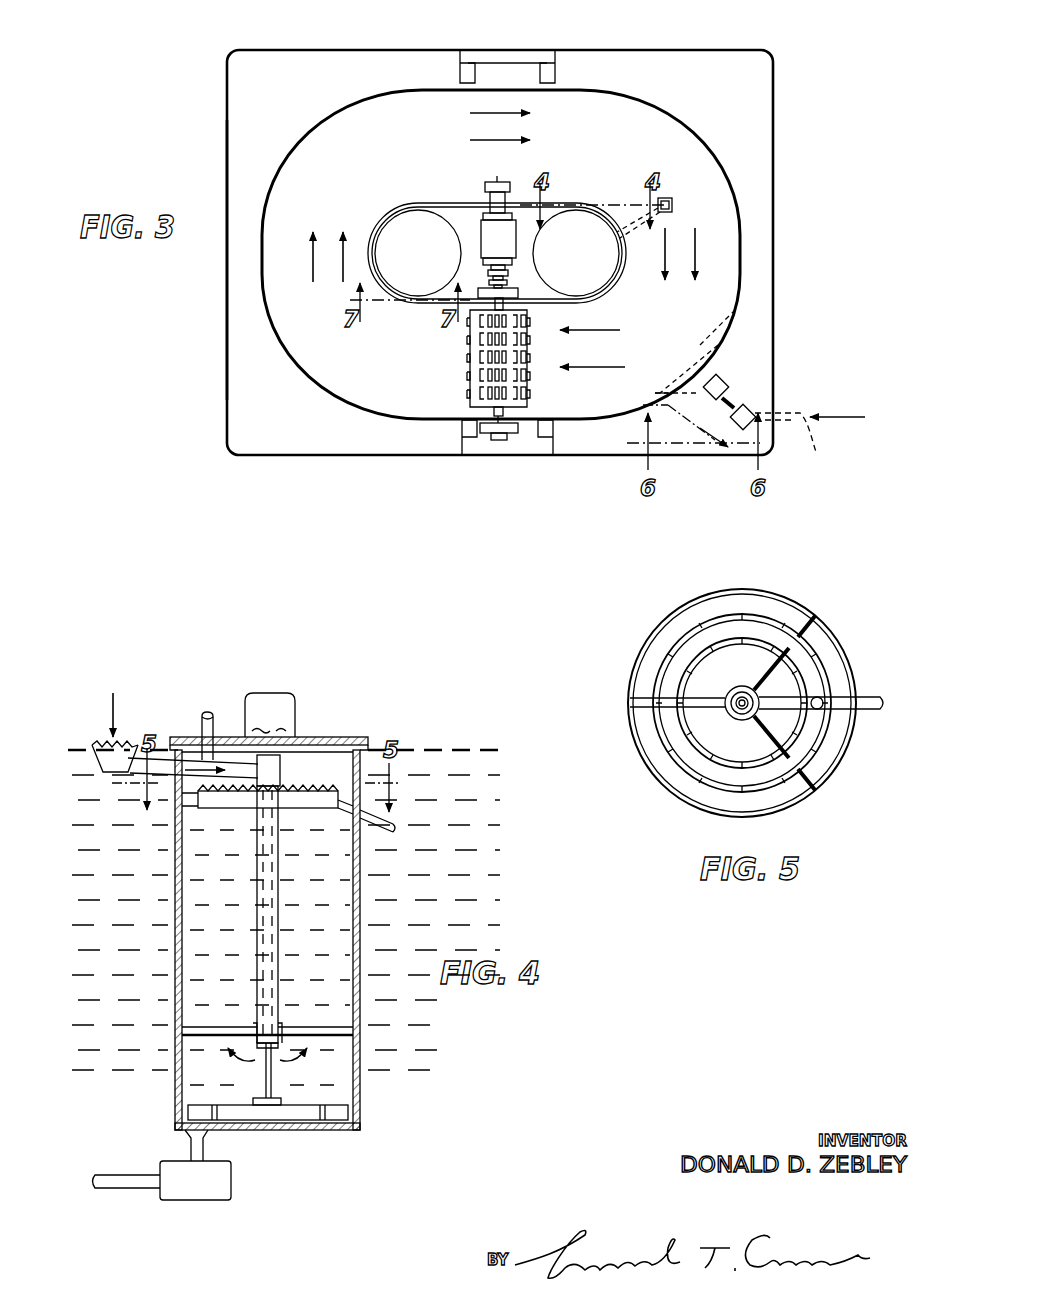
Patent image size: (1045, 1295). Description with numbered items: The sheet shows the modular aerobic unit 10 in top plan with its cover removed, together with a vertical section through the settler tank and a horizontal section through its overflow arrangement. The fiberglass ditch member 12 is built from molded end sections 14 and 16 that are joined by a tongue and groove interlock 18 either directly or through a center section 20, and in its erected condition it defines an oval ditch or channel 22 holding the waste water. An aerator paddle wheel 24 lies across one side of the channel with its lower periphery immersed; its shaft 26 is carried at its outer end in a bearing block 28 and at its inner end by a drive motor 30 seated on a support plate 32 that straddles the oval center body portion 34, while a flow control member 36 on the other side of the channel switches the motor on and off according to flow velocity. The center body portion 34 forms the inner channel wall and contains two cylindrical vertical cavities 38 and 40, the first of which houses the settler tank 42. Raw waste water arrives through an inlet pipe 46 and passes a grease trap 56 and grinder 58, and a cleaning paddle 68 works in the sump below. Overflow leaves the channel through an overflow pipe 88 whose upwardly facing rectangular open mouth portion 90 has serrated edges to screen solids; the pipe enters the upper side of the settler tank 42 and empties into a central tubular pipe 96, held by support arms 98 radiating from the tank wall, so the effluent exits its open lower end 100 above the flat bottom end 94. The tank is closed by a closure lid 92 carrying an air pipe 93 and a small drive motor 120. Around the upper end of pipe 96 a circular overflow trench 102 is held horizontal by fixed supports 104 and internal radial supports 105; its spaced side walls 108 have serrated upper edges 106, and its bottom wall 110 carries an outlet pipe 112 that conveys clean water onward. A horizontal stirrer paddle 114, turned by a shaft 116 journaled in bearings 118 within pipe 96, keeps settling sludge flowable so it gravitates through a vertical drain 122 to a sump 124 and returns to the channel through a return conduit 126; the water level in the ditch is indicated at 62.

In FIG. 3, the aerobic unit 10 is at (775, 176).
In FIG. 3, the ditch member 12 is at (752, 138).
In FIG. 4, the ditch member 12 is at (398, 888).
In FIG. 3, the end section 14 is at (768, 266).
In FIG. 3, the end section 16 is at (241, 324).
In FIG. 3, the tongue and groove interlock 18 is at (553, 50).
In FIG. 3, the center section 20 is at (510, 50).
In FIG. 3, the oval ditch or channel 22 is at (722, 300).
In FIG. 4, the oval ditch or channel 22 is at (432, 760).
In FIG. 3, the aerator paddle wheel 24 is at (468, 354).
In FIG. 3, the shaft 26 is at (508, 413).
In FIG. 3, the bearing block 28 is at (503, 440).
In FIG. 3, the drive motor 30 is at (506, 243).
In FIG. 3, the support plate 32 is at (478, 215).
In FIG. 3, the center body portion 34 is at (560, 196).
In FIG. 4, the center body portion 34 is at (360, 916).
In FIG. 3, the flow control member 36 is at (497, 182).
In FIG. 3, the cylindrical vertical cavity 38 is at (606, 285).
In FIG. 4, the cylindrical vertical cavity 38 is at (362, 1062).
In FIG. 3, the cylindrical vertical cavity 40 is at (385, 262).
In FIG. 4, the settler tank 42 is at (360, 947).
In FIG. 5, the settler tank 42 is at (806, 800).
In FIG. 3, the inlet pipe 46 is at (743, 441).
In FIG. 3, the grease trap 56 is at (748, 410).
In FIG. 3, the grinder 58 is at (725, 388).
In FIG. 4, the liquid level 62 is at (485, 750).
In FIG. 3, the cleaning paddle 68 is at (698, 351).
In FIG. 3, the overflow pipe 88 is at (680, 195).
In FIG. 4, the overflow pipe 88 is at (130, 772).
In FIG. 3, the open mouth portion 90 is at (672, 205).
In FIG. 4, the open mouth portion 90 is at (112, 752).
In FIG. 4, the closure lid 92 is at (310, 737).
In FIG. 4, the air pipe 93 is at (208, 718).
In FIG. 4, the flat bottom end 94 is at (335, 1130).
In FIG. 4, the tubular element or pipe 96 is at (280, 913).
In FIG. 5, the tubular element or pipe 96 is at (762, 713).
In FIG. 4, the support arms 98 is at (335, 1035).
In FIG. 4, the open lower end 100 is at (275, 1035).
In FIG. 4, the circular overflow trench 102 is at (296, 803).
In FIG. 5, the circular overflow trench 102 is at (683, 753).
In FIG. 5, the fixed supports 104 is at (813, 622).
In FIG. 5, the internal radial supports 105 is at (700, 698).
In FIG. 4, the upper edges 106 is at (283, 786).
In FIG. 5, the upper edges 106 is at (705, 790).
In FIG. 4, the side walls 108 is at (220, 800).
In FIG. 5, the bottom wall 110 is at (745, 782).
In FIG. 4, the outlet pipe 112 is at (390, 826).
In FIG. 5, the outlet pipe 112 is at (870, 700).
In FIG. 4, the stirrer paddle 114 is at (295, 1120).
In FIG. 4, the shaft 116 is at (262, 950).
In FIG. 5, the shaft 116 is at (760, 698).
In FIG. 4, the bearings 118 is at (262, 842).
In FIG. 5, the bearings 118 is at (730, 713).
In FIG. 4, the drive motor 120 is at (285, 700).
In FIG. 4, the vertical drain 122 is at (200, 1137).
In FIG. 4, the sump 124 is at (230, 1183).
In FIG. 4, the return conduit 126 is at (130, 1190).